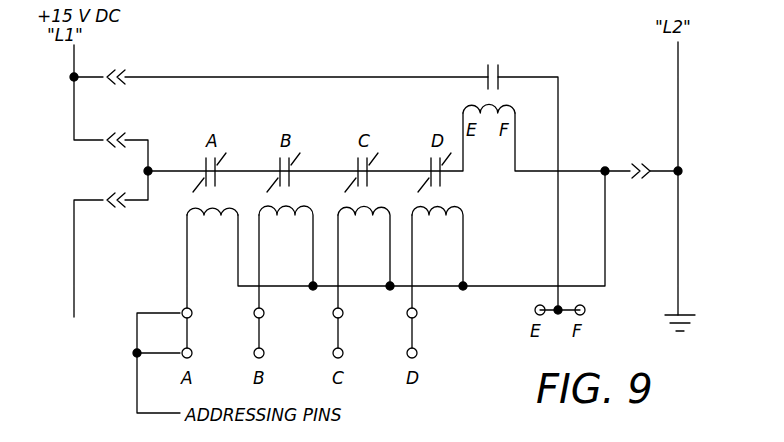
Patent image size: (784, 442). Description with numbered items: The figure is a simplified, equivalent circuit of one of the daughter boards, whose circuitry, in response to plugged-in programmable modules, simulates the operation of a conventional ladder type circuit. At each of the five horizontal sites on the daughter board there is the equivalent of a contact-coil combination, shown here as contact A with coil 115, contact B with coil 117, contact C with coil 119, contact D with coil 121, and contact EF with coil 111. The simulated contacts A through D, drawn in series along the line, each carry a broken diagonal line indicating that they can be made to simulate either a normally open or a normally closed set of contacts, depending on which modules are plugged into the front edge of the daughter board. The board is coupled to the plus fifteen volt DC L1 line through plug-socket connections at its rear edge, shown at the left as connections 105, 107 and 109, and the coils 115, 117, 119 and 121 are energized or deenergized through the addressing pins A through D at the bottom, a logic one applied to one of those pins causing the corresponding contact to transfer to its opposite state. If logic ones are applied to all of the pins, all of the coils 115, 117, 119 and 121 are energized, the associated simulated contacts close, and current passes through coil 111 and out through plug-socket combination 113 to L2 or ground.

The connector 105 is at (123, 62).
The connector 107 is at (123, 125).
The connector 109 is at (108, 185).
The coil EF 111 is at (501, 58).
The plug-socket combination 113 is at (648, 155).
The coil 115 is at (212, 227).
The coil 117 is at (286, 246).
The coil 119 is at (364, 246).
The coil 121 is at (437, 247).